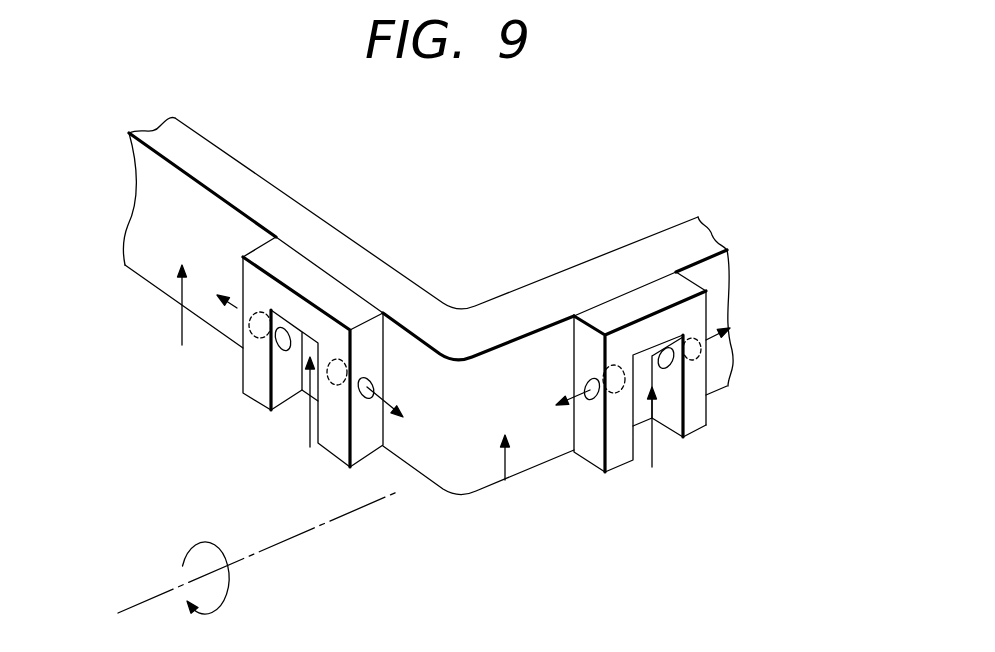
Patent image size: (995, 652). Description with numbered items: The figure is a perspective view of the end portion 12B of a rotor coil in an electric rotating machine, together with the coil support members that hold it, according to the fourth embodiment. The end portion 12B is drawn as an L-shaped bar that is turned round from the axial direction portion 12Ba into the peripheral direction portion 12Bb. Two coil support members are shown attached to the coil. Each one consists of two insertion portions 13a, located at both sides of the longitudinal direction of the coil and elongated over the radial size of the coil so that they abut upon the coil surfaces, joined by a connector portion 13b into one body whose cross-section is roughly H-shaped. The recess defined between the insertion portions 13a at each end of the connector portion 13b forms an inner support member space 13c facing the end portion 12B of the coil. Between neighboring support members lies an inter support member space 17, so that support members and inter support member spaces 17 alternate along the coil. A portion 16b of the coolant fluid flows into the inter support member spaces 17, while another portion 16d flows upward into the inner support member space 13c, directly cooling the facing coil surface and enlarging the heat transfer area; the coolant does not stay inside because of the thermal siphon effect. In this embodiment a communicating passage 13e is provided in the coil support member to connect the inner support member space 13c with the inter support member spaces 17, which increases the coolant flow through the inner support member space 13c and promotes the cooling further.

The end portion of the rotor coil 12B is at (203, 137).
The peripheral direction portion 12Bb is at (268, 197).
The axial direction portion 12Ba is at (703, 235).
The connector portion 13b is at (262, 283).
The insertion portion 13a is at (246, 372).
The inner support member space 13c is at (282, 396).
The communicating passage 13e is at (271, 318).
The portion of the coolant fluid 16b is at (342, 402).
The portion of the coolant fluid 16d is at (474, 425).
The inter support member space 17 is at (153, 266).